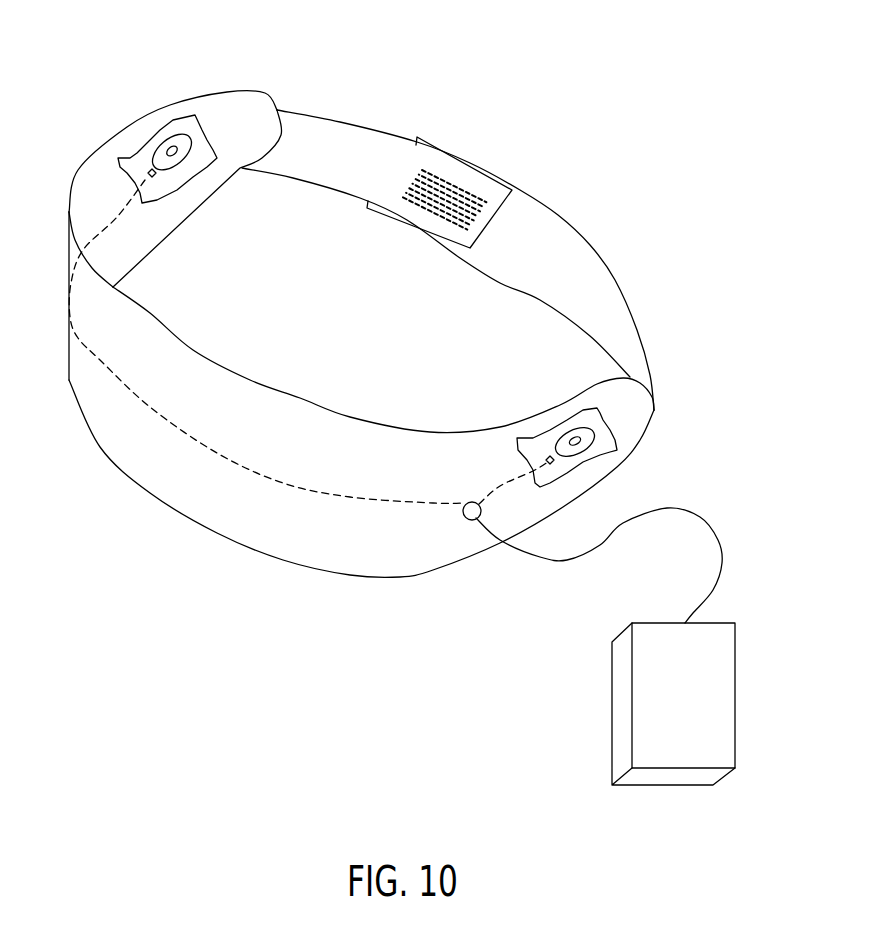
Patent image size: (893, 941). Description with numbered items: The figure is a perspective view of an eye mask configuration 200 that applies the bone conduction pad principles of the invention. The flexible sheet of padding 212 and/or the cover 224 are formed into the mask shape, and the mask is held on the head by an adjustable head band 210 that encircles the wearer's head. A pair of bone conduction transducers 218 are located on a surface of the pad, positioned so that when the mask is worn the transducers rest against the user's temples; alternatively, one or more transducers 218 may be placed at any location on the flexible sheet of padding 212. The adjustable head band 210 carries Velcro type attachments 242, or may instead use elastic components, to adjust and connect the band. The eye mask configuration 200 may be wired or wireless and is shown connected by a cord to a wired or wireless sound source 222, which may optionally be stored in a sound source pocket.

The eye mask configuration 200 is at (150, 64).
The adjustable head band 210 is at (558, 215).
The flexible sheet of padding 212 is at (183, 124).
The bone conduction transducers 218 is at (193, 160).
The sound source 222 is at (612, 695).
The cover 224 is at (260, 107).
The Velcro type attachments 242 is at (453, 180).